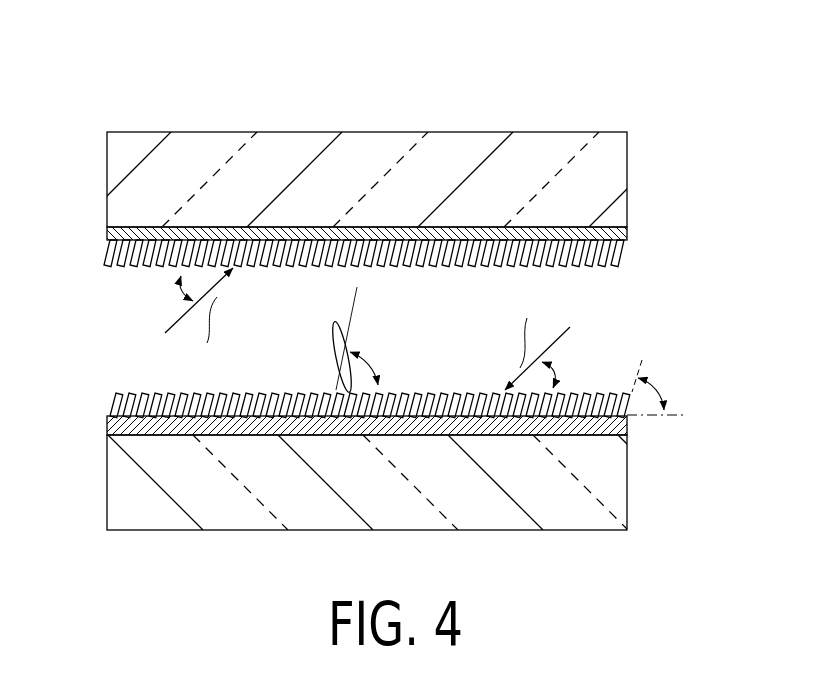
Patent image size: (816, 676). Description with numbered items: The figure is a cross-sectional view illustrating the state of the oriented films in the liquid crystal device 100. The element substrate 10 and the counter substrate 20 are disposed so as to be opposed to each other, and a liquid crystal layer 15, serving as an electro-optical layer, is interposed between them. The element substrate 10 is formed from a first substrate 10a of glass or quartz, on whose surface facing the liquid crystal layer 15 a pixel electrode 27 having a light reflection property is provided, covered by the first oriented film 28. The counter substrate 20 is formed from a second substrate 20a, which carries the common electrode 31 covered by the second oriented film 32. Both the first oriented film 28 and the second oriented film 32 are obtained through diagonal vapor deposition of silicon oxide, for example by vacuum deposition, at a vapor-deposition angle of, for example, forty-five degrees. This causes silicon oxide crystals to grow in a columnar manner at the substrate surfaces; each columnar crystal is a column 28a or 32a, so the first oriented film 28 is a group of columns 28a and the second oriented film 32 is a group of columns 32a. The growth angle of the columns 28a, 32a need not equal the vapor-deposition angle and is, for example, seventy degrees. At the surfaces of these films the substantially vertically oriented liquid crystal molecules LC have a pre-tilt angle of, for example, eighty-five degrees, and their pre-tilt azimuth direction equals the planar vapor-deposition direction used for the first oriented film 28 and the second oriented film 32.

The liquid crystal device 100 is at (631, 55).
The counter substrate 20 is at (718, 132).
The second substrate 20a is at (627, 182).
The common electrode 31 is at (627, 238).
The second orientation film 32 is at (99, 254).
The column 32a is at (103, 270).
The liquid crystal layer 15 is at (610, 330).
The liquid crystal molecule LC is at (333, 355).
The element substrate 10 is at (718, 388).
The first substrate 10a is at (617, 478).
The pixel electrode 27 is at (627, 426).
The first orientation film 28 is at (104, 404).
The column 28a is at (113, 395).